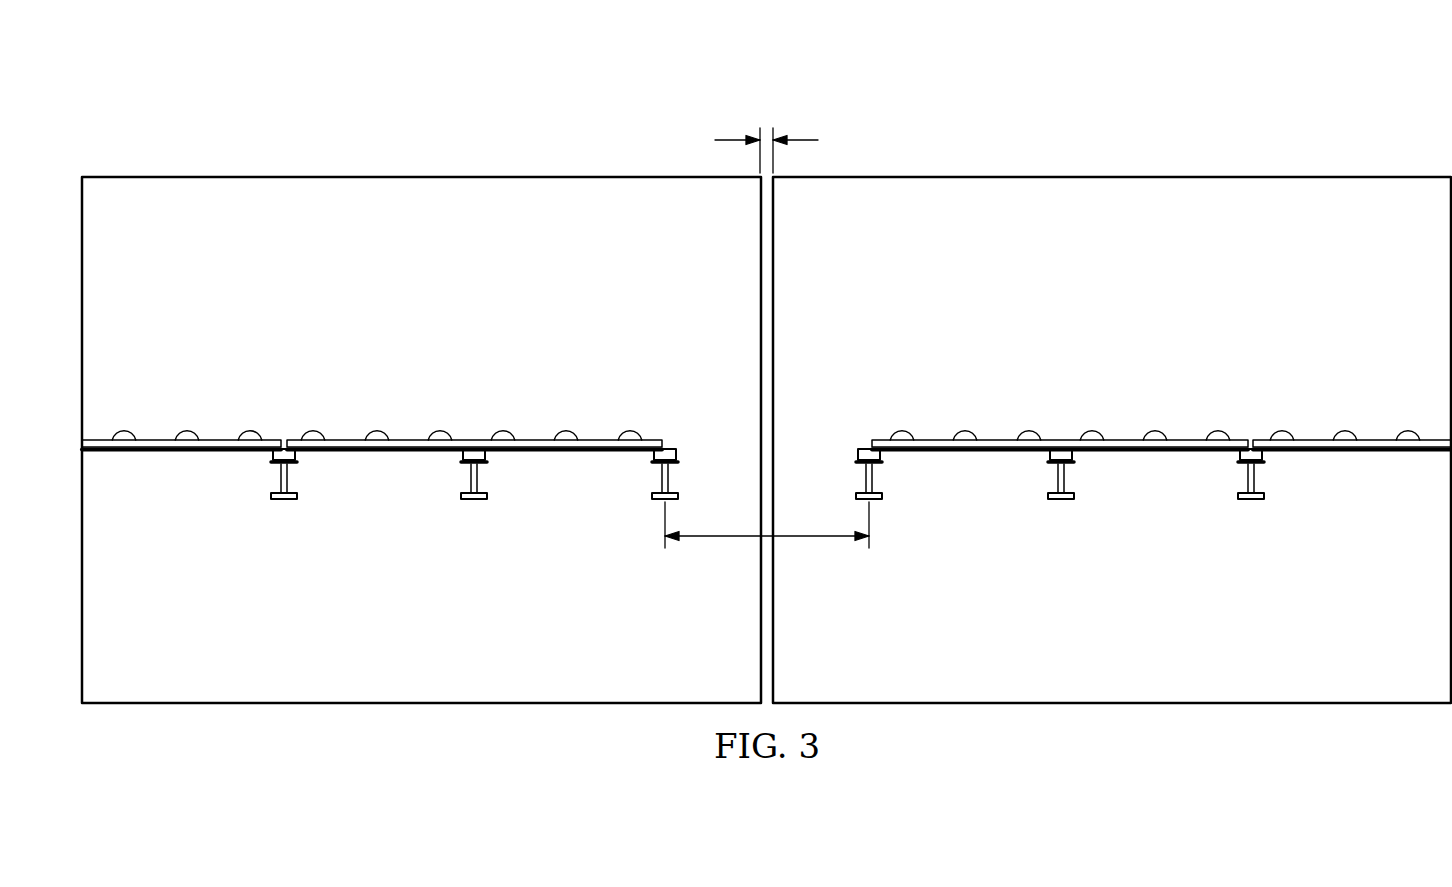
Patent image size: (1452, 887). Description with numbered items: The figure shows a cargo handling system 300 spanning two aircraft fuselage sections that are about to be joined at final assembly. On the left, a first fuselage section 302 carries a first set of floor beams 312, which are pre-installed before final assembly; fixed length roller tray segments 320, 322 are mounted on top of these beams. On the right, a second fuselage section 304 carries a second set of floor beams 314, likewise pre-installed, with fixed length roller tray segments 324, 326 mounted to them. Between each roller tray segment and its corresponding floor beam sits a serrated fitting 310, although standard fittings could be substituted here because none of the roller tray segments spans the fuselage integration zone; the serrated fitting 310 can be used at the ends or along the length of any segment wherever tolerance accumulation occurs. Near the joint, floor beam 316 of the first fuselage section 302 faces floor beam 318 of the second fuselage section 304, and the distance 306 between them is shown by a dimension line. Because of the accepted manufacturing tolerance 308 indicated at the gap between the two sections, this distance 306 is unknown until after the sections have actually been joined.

The cargo handling system 300 is at (500, 82).
The first fuselage section 302 is at (421, 440).
The second fuselage section 304 is at (1112, 440).
The distance 306 is at (810, 537).
The accepted manufacturing tolerance 308 is at (803, 140).
The serrated fitting 310 is at (272, 455).
The first set of floor beams 312 is at (438, 562).
The second set of floor beams 314 is at (1095, 562).
The floor beam 316 is at (660, 478).
The floor beam 318 is at (873, 478).
The fixed length roller tray segment 320 is at (158, 437).
The fixed length roller tray segment 322 is at (348, 438).
The fixed length roller tray segment 324 is at (1123, 438).
The fixed length roller tray segment 326 is at (1387, 438).